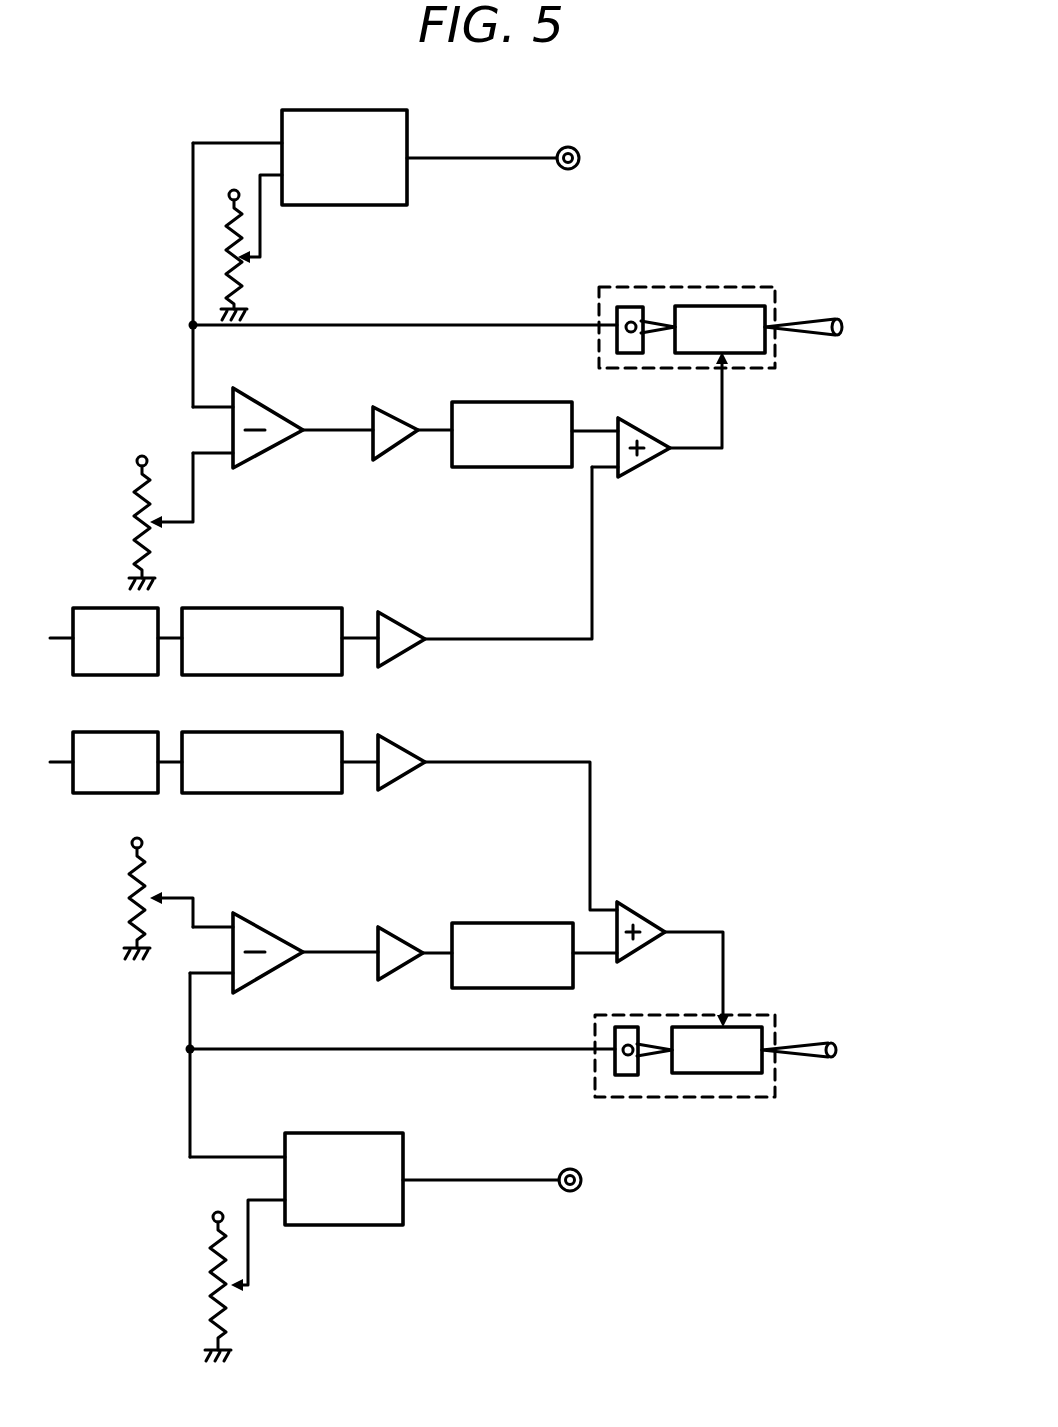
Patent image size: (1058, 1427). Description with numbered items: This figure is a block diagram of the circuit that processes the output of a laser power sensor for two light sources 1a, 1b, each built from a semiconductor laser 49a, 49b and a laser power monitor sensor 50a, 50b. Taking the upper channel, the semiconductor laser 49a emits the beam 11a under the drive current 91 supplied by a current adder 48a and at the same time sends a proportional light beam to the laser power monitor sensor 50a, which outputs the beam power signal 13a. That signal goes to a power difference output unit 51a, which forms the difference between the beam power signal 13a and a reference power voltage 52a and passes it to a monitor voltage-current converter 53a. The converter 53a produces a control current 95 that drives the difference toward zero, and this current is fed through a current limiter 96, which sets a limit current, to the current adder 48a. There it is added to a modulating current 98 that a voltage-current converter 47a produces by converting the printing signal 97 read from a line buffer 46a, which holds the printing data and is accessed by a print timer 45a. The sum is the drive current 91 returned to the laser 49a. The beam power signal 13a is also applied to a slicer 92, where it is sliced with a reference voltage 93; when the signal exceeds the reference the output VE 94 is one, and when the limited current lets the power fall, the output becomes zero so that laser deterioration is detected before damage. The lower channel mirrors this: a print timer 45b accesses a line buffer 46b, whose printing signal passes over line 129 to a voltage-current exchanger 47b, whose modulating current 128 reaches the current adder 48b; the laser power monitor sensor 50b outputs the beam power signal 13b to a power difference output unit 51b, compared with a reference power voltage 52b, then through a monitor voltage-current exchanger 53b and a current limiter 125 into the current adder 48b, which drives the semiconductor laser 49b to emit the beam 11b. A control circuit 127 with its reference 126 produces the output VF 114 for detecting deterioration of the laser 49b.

The slicer 92 is at (390, 110).
The output VE 94 is at (592, 140).
The reference voltage 93 is at (262, 250).
The beam power signal 13a is at (438, 325).
The light source 1a is at (745, 287).
The laser power monitor sensor 50a is at (628, 305).
The semiconductor laser 49a is at (692, 305).
The beam 11a is at (822, 320).
The power difference output unit 51a is at (272, 455).
The monitor voltage-current converter 53a is at (393, 452).
The control current 95 is at (426, 412).
The current limiter 96 is at (548, 467).
The current adder 48a is at (655, 460).
The drive current 91 is at (722, 428).
The reference power voltage 52a is at (157, 533).
The print timer 45a is at (89, 608).
The line buffer 46a is at (313, 608).
The printing signal 97 is at (360, 637).
The voltage-current converter 47a is at (404, 622).
The modulating current 98 is at (594, 612).
The print timer 45b is at (84, 793).
The line buffer 46b is at (315, 793).
The signal line 129 is at (358, 764).
The voltage-current exchanger 47b is at (404, 778).
The signal line 128 is at (592, 783).
The reference power voltage 52b is at (156, 877).
The power difference output unit 51b is at (268, 920).
The monitor voltage-current exchanger 53b is at (405, 927).
The current limiter 125 is at (477, 923).
The current adder 48b is at (650, 914).
The beam power signal 13b is at (450, 1050).
The light source 1b is at (663, 1097).
The laser power monitor sensor 50b is at (623, 1075).
The semiconductor laser 49b is at (745, 1073).
The beam 11b is at (822, 1058).
The control circuit 127 is at (385, 1225).
The variable resistor 126 is at (236, 1296).
The terminal VF 114 is at (585, 1196).